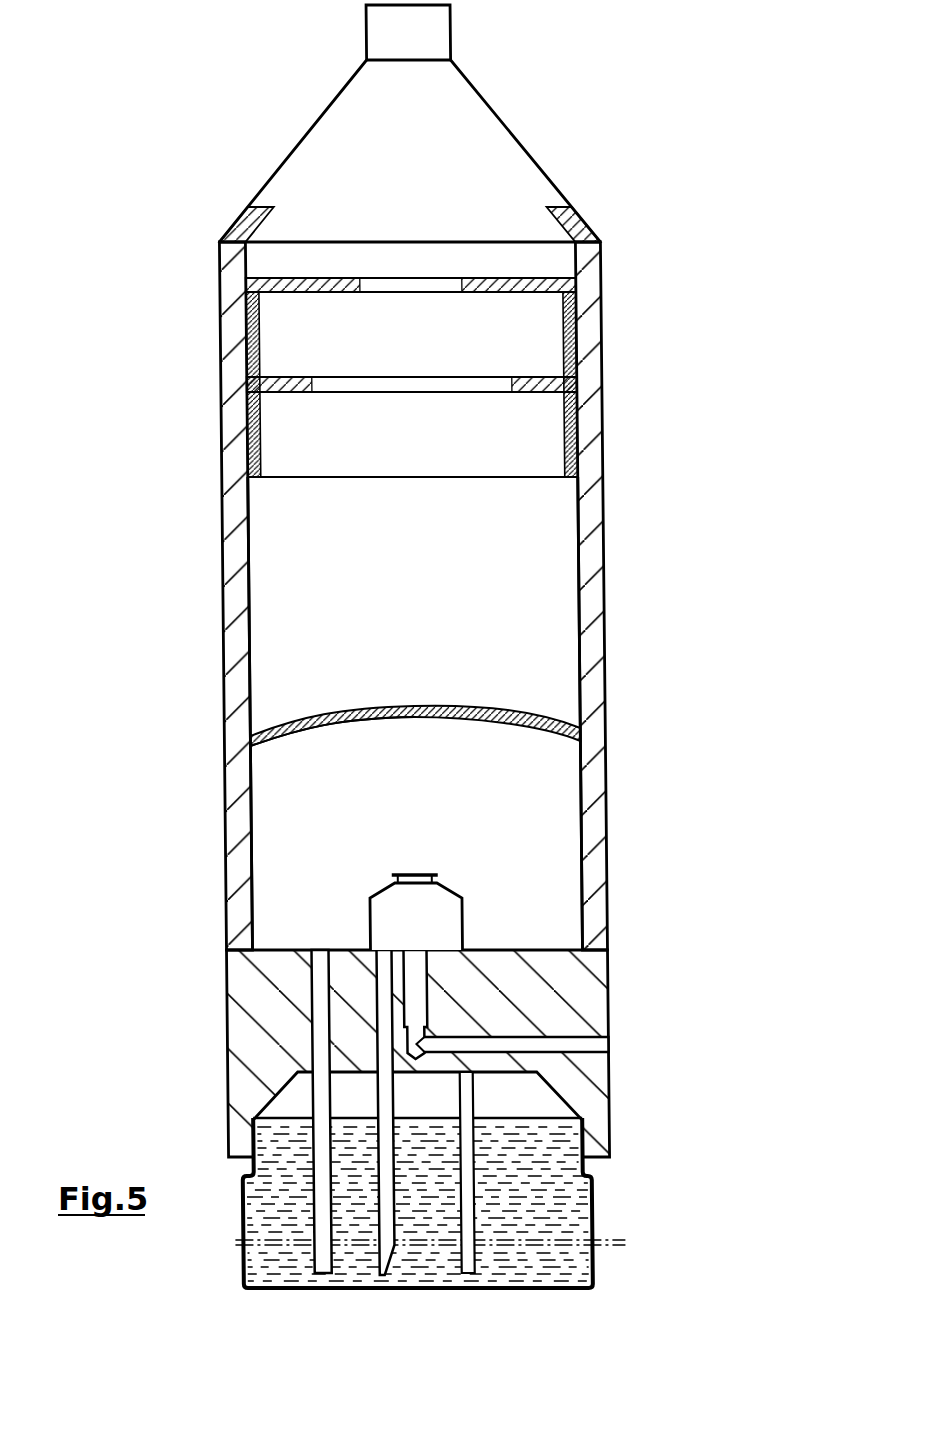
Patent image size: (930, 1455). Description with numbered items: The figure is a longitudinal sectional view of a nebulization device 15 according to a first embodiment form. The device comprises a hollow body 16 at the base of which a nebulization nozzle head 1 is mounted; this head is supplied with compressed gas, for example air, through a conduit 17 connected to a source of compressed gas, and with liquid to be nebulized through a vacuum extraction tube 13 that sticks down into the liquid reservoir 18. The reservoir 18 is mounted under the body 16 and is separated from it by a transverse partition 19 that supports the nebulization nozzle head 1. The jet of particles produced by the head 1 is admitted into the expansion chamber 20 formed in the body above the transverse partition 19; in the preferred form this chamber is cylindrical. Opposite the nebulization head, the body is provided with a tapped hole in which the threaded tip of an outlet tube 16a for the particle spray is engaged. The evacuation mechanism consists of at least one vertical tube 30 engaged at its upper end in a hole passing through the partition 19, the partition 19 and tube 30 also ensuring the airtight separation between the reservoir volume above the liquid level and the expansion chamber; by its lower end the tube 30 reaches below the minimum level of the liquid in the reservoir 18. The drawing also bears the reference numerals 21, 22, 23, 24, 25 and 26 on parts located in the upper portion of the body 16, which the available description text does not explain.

The nebulization nozzle head 1 is at (400, 920).
The vacuum extraction tube 13 is at (382, 1097).
The nebulization device 15 is at (607, 663).
The hollow body 16 is at (588, 807).
The outlet tube 16a is at (441, 38).
The conduit 17 is at (578, 1043).
The liquid reservoir 18 is at (587, 1222).
The transverse partition 19 is at (588, 1007).
The expansion chamber 20 is at (463, 770).
The edge of baffle 21 is at (249, 742).
The curved baffle plate 22 is at (414, 705).
The filter / burner assembly 23 is at (210, 275).
The perforated plate 24 is at (552, 213).
The plate opening 25 is at (304, 278).
The inner sleeve 26 is at (566, 343).
The vertical tube 30 is at (322, 1073).